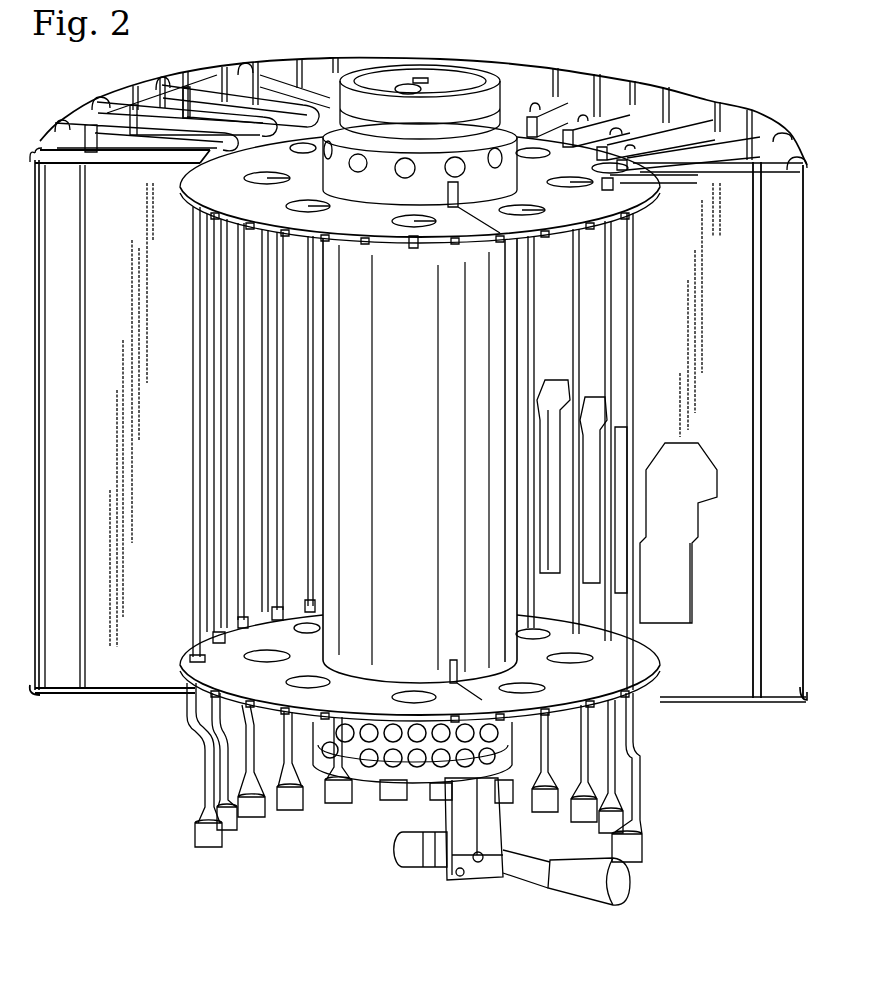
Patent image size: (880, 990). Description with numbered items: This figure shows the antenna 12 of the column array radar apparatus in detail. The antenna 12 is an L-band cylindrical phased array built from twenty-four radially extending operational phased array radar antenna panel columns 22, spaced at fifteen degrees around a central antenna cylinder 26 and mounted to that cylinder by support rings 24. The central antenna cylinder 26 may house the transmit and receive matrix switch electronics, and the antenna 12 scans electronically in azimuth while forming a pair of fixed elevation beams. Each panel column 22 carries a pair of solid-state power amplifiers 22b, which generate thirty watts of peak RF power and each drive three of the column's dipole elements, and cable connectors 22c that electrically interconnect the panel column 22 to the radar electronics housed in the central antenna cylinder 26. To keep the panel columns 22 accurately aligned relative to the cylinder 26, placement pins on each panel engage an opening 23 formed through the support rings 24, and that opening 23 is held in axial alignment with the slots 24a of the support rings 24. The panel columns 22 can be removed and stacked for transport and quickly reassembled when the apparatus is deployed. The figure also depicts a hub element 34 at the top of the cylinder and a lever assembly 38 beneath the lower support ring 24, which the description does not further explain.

The antenna 12 is at (137, 744).
The operational phased array radar antenna panel column 22 is at (775, 683).
The solid-state power amplifier 22b is at (700, 492).
The cable connector 22c is at (615, 190).
The opening 23 is at (614, 197).
The support ring 24 is at (573, 208).
The slot 24a is at (413, 250).
The central antenna cylinder 26 is at (428, 507).
The hub 34 is at (403, 85).
The lever assembly 38 is at (523, 878).